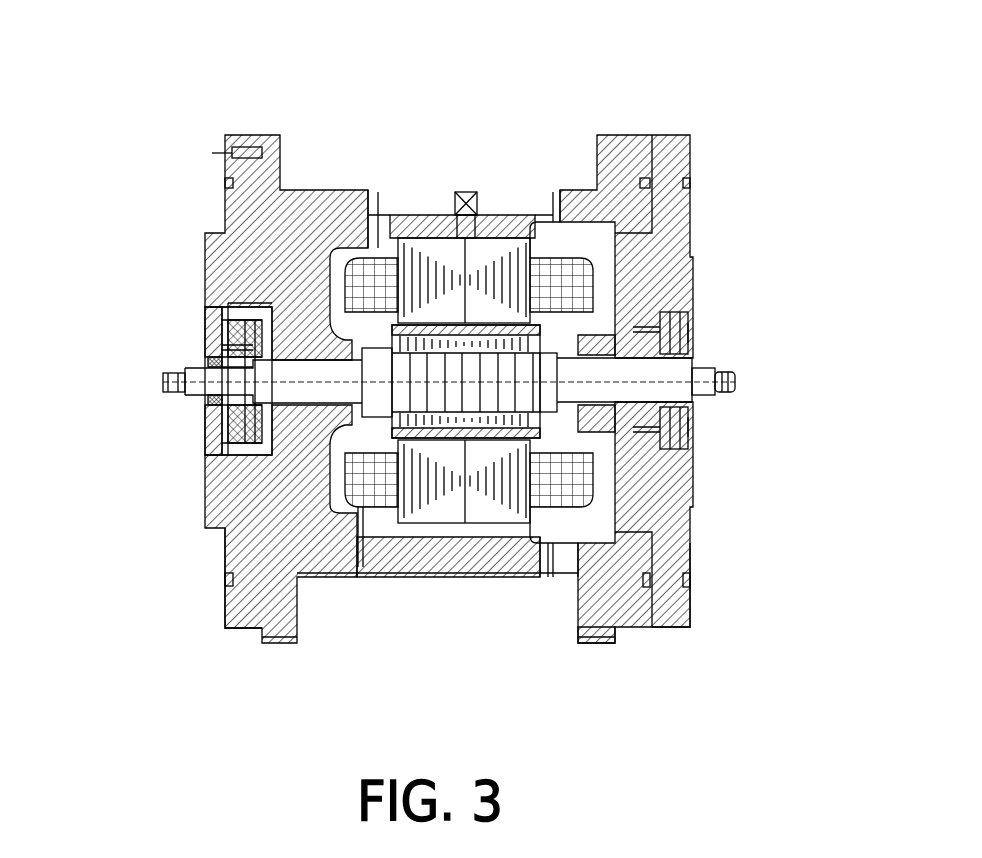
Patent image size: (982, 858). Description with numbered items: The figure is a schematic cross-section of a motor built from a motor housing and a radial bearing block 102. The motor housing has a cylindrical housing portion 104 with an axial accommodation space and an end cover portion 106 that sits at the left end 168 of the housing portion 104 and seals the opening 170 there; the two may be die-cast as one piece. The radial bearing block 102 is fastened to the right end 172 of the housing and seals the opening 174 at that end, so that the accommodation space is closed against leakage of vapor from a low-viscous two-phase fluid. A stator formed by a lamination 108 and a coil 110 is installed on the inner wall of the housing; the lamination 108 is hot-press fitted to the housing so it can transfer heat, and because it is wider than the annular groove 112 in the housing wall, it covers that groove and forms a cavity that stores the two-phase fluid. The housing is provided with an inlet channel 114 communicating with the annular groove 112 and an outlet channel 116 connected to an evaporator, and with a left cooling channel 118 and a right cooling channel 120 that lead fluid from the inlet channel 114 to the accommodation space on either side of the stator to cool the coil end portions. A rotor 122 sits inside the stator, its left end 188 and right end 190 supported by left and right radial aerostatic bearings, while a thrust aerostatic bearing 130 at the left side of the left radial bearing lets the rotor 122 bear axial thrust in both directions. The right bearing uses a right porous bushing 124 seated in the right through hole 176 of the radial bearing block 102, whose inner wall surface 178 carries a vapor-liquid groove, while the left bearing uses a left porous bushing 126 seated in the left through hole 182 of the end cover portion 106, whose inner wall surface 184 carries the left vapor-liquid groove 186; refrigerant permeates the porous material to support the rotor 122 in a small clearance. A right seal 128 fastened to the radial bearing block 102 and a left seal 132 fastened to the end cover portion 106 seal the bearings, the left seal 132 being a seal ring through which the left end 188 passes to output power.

The radial bearing block 102 is at (673, 527).
The housing portion 104 is at (430, 560).
The end cover portion 106 is at (250, 253).
The lamination 108 is at (476, 532).
The coil 110 is at (360, 508).
The annular groove 112 is at (458, 543).
The inlet channel 114 is at (468, 212).
The outlet channel 116 is at (548, 545).
The left cooling channel 118 is at (400, 205).
The right cooling channel 120 is at (520, 205).
The rotor 122 is at (482, 382).
The right porous bushing 124 is at (688, 430).
The left porous bushing 126 is at (210, 457).
The right seal 128 is at (690, 320).
The seal 130 is at (217, 347).
The left seal 132 is at (213, 350).
The left end 168 is at (242, 604).
The opening 170 is at (227, 578).
The right end 172 is at (630, 632).
The opening 174 is at (690, 597).
The right through hole 176 is at (697, 402).
The inner wall surface 178 is at (615, 440).
The left through hole 182 is at (236, 402).
The inner wall surface 184 is at (337, 413).
The left vapor-liquid groove 186 is at (323, 420).
The left end 188 is at (165, 383).
The right end 190 is at (737, 378).